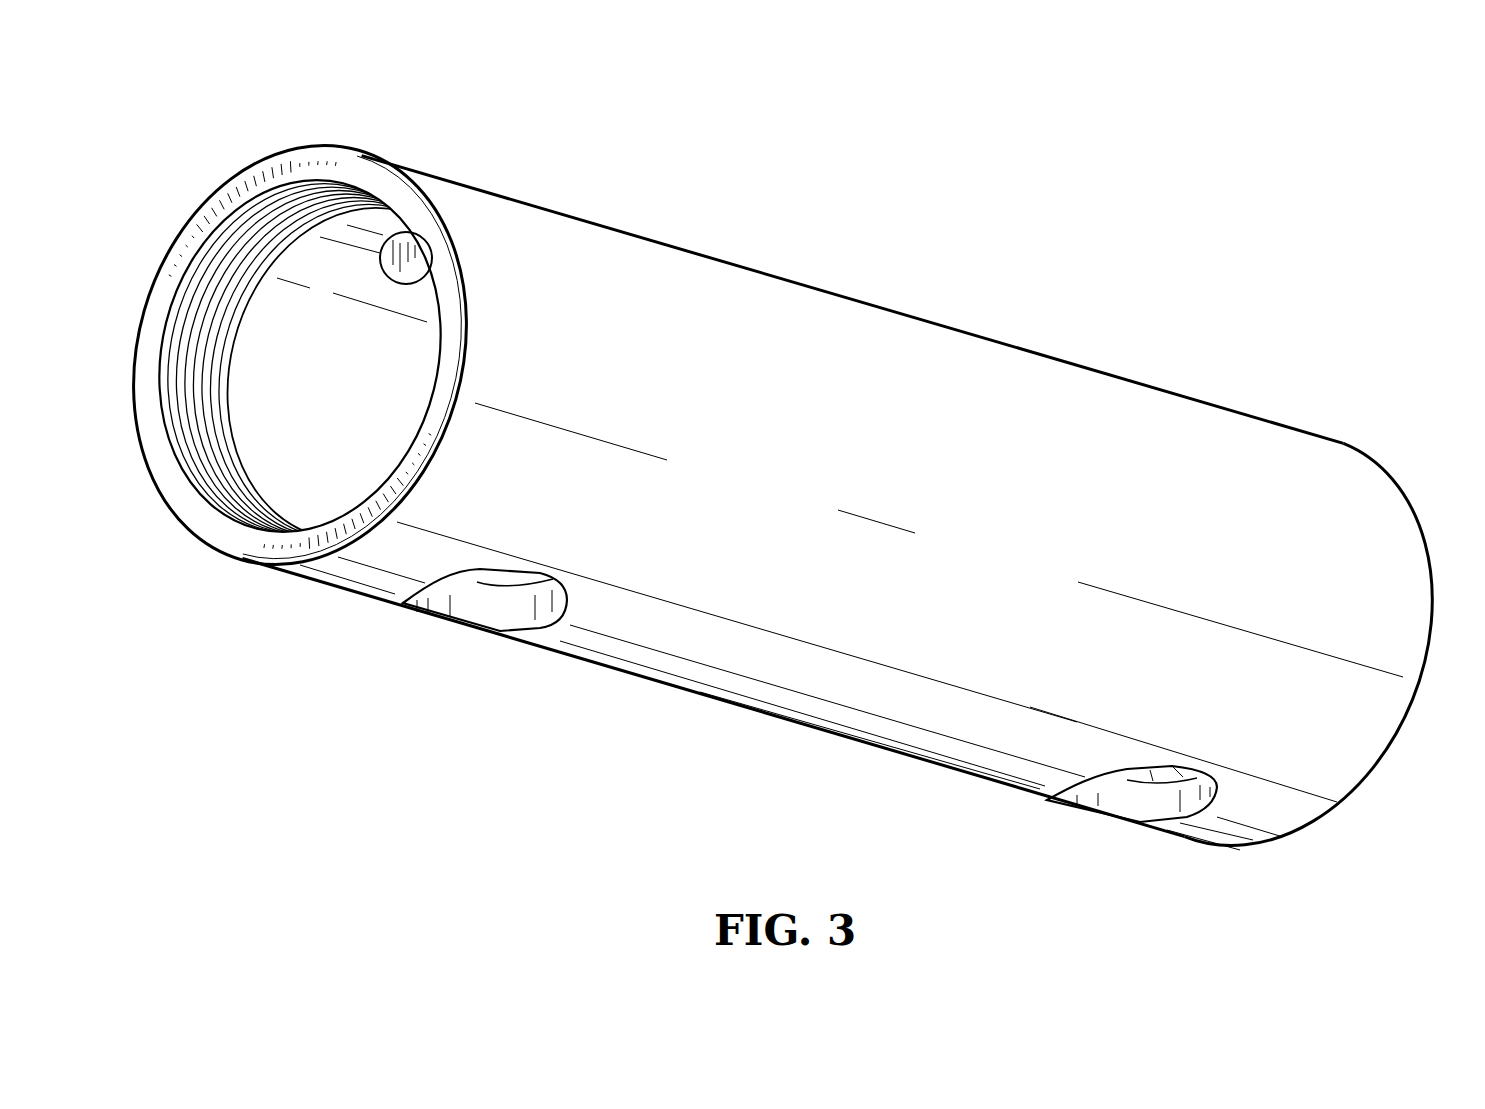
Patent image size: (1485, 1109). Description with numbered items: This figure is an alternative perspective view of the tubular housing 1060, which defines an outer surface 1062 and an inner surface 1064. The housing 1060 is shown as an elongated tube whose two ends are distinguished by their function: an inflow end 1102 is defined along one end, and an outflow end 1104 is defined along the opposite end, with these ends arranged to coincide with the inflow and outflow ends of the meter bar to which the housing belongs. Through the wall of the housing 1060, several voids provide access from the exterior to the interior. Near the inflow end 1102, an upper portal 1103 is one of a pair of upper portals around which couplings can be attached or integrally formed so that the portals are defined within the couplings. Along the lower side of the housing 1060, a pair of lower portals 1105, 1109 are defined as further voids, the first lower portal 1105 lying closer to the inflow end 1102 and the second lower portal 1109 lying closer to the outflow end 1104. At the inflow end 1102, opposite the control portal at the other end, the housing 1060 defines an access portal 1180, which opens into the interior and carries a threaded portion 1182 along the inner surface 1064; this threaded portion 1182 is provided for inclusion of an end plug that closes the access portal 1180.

The housing 1060 is at (759, 527).
The outer surface 1062 is at (920, 594).
The inner surface 1064 is at (367, 388).
The inflow end 1102 is at (347, 628).
The outflow end 1104 is at (1252, 883).
The upper portal 1103 is at (408, 272).
The lower portal 1105 is at (505, 620).
The lower portal 1109 is at (1107, 798).
The access portal 1180 is at (245, 528).
The threaded portion 1182 is at (260, 221).